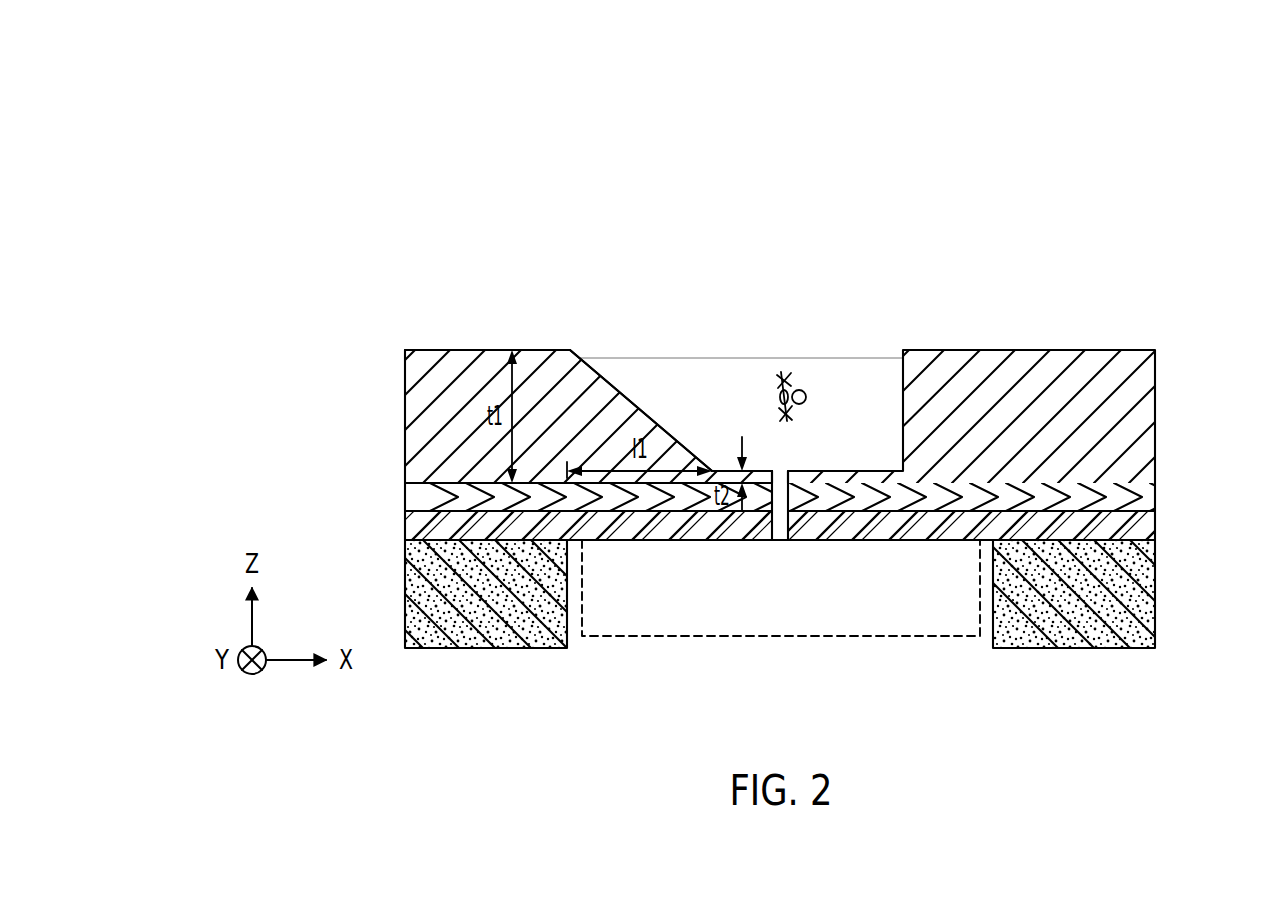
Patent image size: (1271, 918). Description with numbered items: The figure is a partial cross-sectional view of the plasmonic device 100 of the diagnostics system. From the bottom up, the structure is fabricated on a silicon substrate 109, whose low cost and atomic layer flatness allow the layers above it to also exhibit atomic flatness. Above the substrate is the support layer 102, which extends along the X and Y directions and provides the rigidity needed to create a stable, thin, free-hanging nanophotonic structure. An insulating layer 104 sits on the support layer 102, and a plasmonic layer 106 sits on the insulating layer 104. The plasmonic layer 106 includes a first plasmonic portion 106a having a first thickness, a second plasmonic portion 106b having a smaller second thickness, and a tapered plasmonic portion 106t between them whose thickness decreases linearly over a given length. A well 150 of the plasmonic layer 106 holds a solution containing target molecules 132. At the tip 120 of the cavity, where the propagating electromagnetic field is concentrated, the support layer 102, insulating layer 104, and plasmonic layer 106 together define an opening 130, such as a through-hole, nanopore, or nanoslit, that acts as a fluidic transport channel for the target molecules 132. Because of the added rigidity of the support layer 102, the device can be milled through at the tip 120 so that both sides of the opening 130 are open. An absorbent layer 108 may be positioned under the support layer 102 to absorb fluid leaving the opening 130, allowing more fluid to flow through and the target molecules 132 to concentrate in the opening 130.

The plasmonic device 100 is at (303, 165).
The well 150 is at (861, 318).
The plasmonic layer 106 is at (1155, 415).
The first plasmonic portion 106a is at (495, 349).
The tapered plasmonic portion 106t is at (618, 388).
The second plasmonic portion 106b is at (723, 469).
The tip 120 is at (768, 471).
The target molecules 132 is at (786, 374).
The opening 130 is at (780, 492).
The insulating layer 104 is at (1155, 497).
The support layer 102 is at (1155, 525).
The silicon substrate 109 is at (1150, 612).
The absorbent layer 108 is at (776, 640).